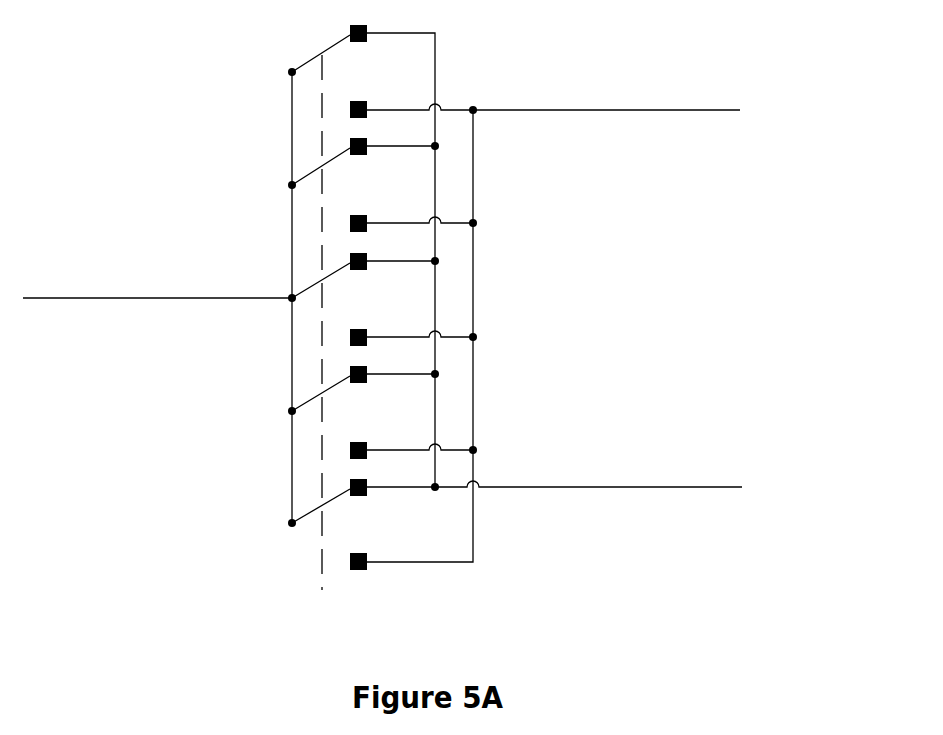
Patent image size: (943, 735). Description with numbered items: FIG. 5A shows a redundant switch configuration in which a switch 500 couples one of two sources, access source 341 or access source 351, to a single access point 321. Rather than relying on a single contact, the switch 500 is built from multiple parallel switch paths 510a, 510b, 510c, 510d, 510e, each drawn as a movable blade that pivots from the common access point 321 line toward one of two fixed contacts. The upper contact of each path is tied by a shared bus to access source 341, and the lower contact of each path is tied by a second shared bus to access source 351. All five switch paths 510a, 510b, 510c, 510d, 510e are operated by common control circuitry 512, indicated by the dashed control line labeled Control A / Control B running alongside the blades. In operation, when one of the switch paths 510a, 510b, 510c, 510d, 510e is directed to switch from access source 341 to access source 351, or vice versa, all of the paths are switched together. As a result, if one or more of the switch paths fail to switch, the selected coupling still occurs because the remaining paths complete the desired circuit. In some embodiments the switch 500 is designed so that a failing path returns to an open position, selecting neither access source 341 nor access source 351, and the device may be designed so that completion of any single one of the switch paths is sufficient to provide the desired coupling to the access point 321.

The switch 500 is at (713, 282).
The switch path 510a is at (305, 63).
The switch path 510b is at (305, 176).
The switch path 510c is at (305, 290).
The switch path 510d is at (305, 403).
The switch path 510e is at (305, 516).
The access point 321 is at (63, 260).
The access source 341 is at (637, 82).
The access source 351 is at (637, 460).
The common control circuitry 512 is at (505, 588).